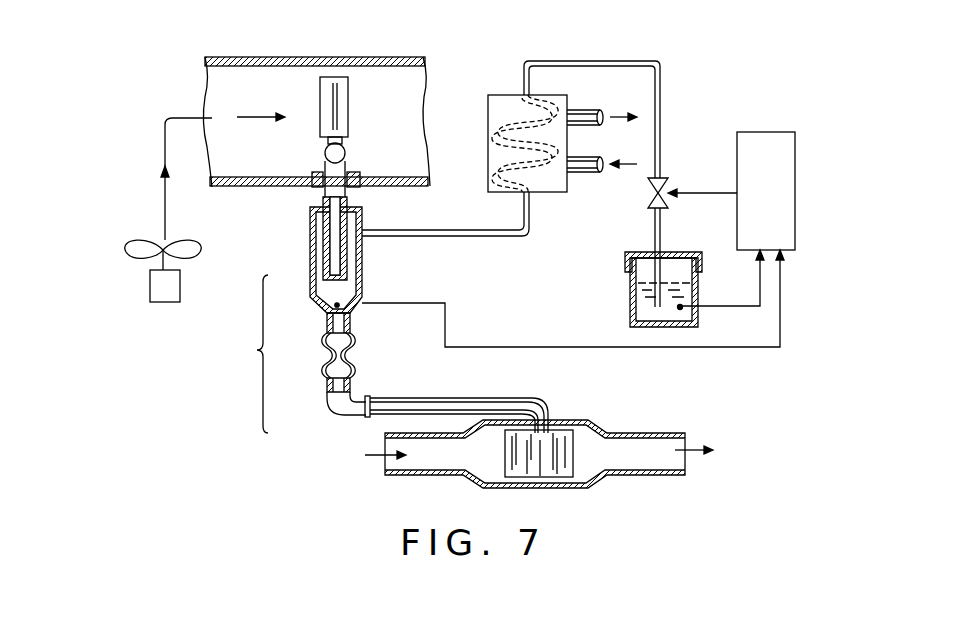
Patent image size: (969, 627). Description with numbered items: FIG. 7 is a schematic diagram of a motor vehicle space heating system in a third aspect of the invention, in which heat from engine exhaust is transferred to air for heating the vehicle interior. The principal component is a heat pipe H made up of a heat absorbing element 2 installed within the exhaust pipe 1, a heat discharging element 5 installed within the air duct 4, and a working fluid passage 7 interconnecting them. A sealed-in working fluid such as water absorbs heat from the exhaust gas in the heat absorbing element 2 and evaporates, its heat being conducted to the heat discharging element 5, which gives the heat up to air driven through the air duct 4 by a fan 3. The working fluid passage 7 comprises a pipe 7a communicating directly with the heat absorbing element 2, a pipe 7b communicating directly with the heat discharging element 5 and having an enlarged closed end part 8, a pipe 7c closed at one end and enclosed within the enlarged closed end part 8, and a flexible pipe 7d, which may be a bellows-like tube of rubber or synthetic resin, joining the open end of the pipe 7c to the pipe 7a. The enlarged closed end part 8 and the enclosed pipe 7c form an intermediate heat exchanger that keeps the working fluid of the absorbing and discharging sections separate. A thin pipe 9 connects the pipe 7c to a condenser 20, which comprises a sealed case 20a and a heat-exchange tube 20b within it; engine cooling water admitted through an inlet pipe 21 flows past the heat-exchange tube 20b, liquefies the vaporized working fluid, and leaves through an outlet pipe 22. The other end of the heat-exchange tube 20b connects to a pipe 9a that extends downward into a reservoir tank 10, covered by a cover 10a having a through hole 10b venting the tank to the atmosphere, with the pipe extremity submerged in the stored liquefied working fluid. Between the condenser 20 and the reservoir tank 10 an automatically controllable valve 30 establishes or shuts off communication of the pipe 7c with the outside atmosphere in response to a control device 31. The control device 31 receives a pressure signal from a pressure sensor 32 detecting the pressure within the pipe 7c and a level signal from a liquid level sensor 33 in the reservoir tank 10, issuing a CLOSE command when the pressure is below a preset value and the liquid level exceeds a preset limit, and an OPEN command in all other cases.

The exhaust pipe 1 is at (637, 432).
The heat absorbing element 2 is at (563, 443).
The fan 3 is at (137, 241).
The air duct 4 is at (232, 57).
The heat discharging element 5 is at (349, 101).
The working fluid passage 7 is at (402, 302).
The pipe 7a is at (447, 402).
The pipe 7b is at (326, 192).
The pipe 7c is at (363, 271).
The flexible pipe 7d is at (326, 359).
The enlarged closed end part 8 is at (323, 259).
The thin pipe 9 is at (468, 238).
The pipe 9a is at (612, 61).
The reservoir tank 10 is at (630, 297).
The cover 10a is at (632, 253).
The through hole 10b is at (682, 254).
The condenser 20 is at (504, 108).
The case 20a is at (488, 110).
The heat-exchange tube 20b is at (493, 147).
The inlet pipe 21 is at (585, 173).
The outlet pipe 22 is at (585, 110).
The automatically controllable valve 30 is at (662, 185).
The control device 31 is at (760, 131).
The pressure sensor 32 is at (339, 307).
The liquid level sensor 33 is at (683, 305).
The heat pipe H is at (250, 362).